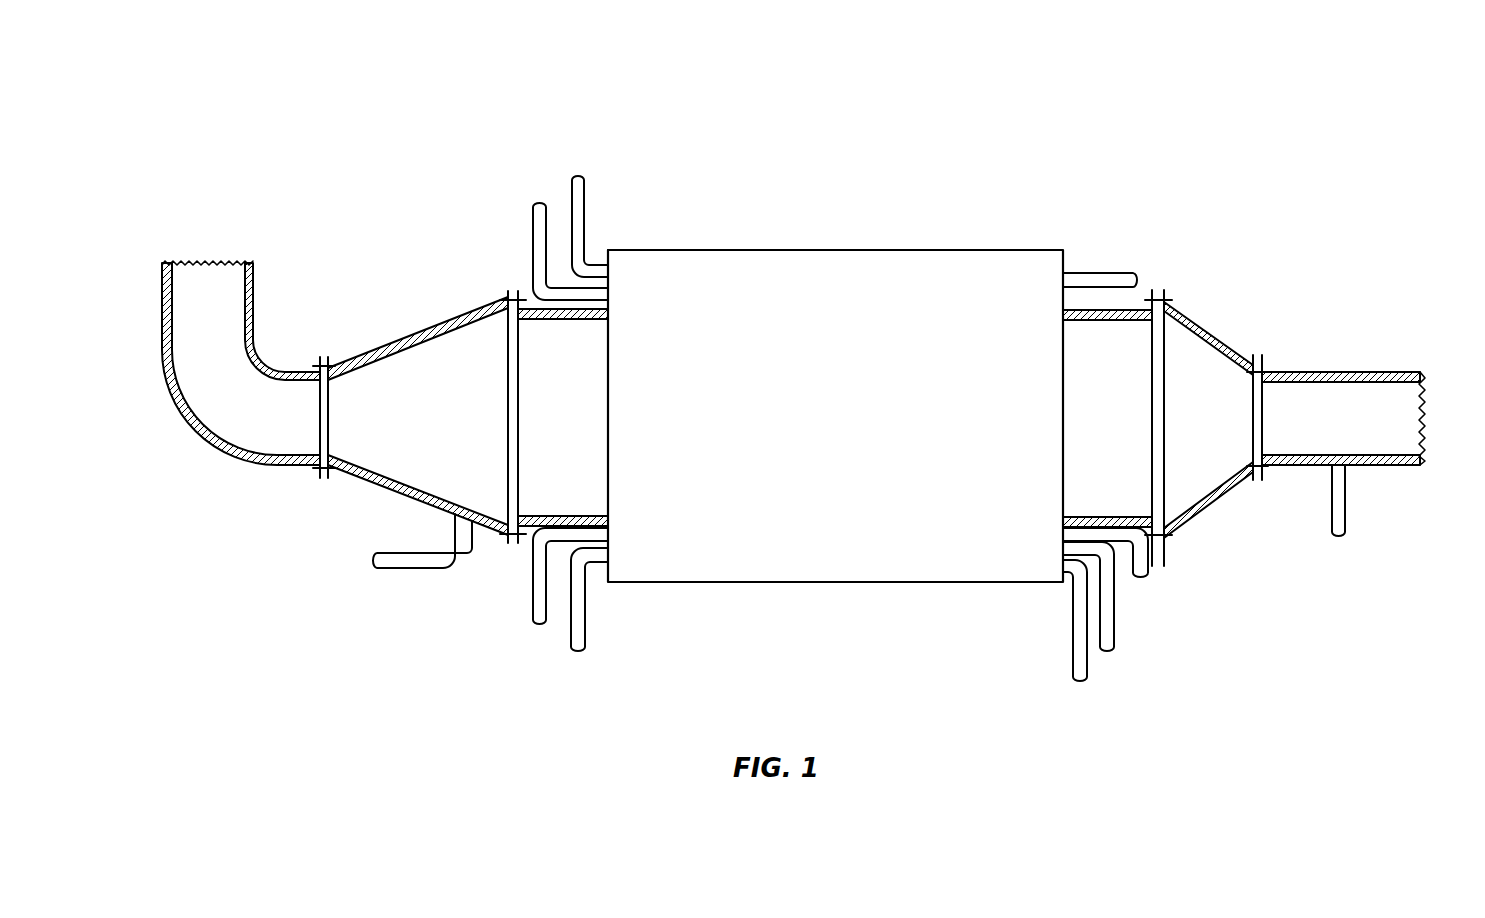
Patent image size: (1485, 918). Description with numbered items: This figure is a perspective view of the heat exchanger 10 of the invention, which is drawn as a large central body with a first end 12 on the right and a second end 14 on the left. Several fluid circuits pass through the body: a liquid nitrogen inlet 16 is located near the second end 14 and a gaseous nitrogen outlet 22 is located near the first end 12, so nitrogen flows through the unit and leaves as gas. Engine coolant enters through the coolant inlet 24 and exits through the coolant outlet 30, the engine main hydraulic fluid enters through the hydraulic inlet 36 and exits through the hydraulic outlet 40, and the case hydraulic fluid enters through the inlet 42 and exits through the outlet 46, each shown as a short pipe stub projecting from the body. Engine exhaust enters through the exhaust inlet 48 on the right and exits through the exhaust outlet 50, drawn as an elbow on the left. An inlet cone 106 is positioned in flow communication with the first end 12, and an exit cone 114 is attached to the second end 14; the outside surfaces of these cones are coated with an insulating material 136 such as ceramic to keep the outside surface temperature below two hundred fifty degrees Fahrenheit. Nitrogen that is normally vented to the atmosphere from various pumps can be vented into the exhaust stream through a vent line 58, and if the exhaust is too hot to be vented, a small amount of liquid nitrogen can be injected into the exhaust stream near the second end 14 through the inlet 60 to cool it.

The heat exchanger 10 is at (766, 140).
The first end 12 is at (995, 250).
The second end 14 is at (625, 250).
The liquid nitrogen inlet 16 is at (573, 180).
The gaseous nitrogen outlet 22 is at (1148, 574).
The coolant inlet 24 is at (540, 234).
The coolant outlet 30 is at (1135, 278).
The hydraulic inlet 36 is at (1088, 679).
The hydraulic outlet 40 is at (532, 621).
The inlet 42 is at (572, 648).
The outlet 46 is at (1113, 648).
The exhaust inlet 48 is at (1425, 412).
The exhaust outlet 50 is at (215, 262).
The vent line 58 is at (1343, 534).
The inlet 60 is at (377, 566).
The inlet cone 106 is at (1245, 376).
The exit cone 114 is at (385, 470).
The insulating material 136 is at (418, 335).